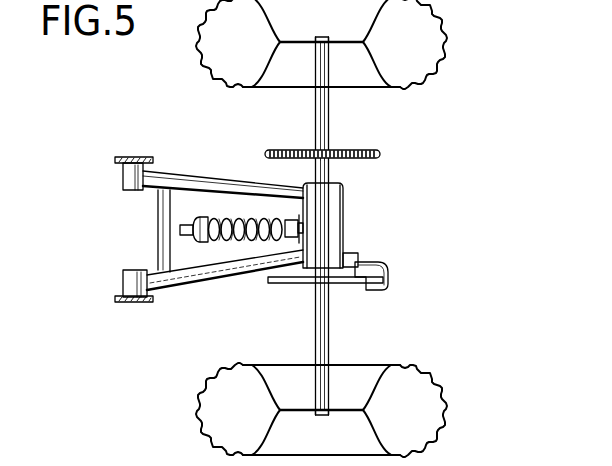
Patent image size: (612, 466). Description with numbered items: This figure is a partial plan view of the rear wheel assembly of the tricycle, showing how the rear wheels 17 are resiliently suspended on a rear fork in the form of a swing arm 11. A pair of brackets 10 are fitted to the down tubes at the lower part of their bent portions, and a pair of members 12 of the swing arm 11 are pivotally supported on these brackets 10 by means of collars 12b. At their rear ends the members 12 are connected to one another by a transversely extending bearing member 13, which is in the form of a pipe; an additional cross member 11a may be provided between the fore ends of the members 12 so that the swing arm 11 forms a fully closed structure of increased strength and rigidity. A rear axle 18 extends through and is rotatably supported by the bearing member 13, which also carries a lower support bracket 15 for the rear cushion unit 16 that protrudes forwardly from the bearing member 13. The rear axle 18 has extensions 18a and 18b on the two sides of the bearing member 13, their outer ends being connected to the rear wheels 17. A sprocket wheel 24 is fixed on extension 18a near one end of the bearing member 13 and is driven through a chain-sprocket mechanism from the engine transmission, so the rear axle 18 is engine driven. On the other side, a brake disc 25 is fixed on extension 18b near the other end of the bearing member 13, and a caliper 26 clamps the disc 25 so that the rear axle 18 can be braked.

The bracket 10 is at (122, 156).
The swing arm 11 is at (183, 215).
The cross member 11a is at (162, 223).
The member 12 is at (192, 181).
The collar 12b is at (127, 178).
The bearing member 13 is at (318, 199).
The lower support bracket 15 is at (305, 214).
The rear cushion unit 16 is at (230, 217).
The rear wheel 17 is at (443, 42).
The rear axle 18 is at (365, 226).
The extension 18a is at (323, 110).
The extension 18b is at (325, 338).
The sprocket wheel 24 is at (357, 152).
The brake disc 25 is at (318, 299).
The caliper 26 is at (380, 263).